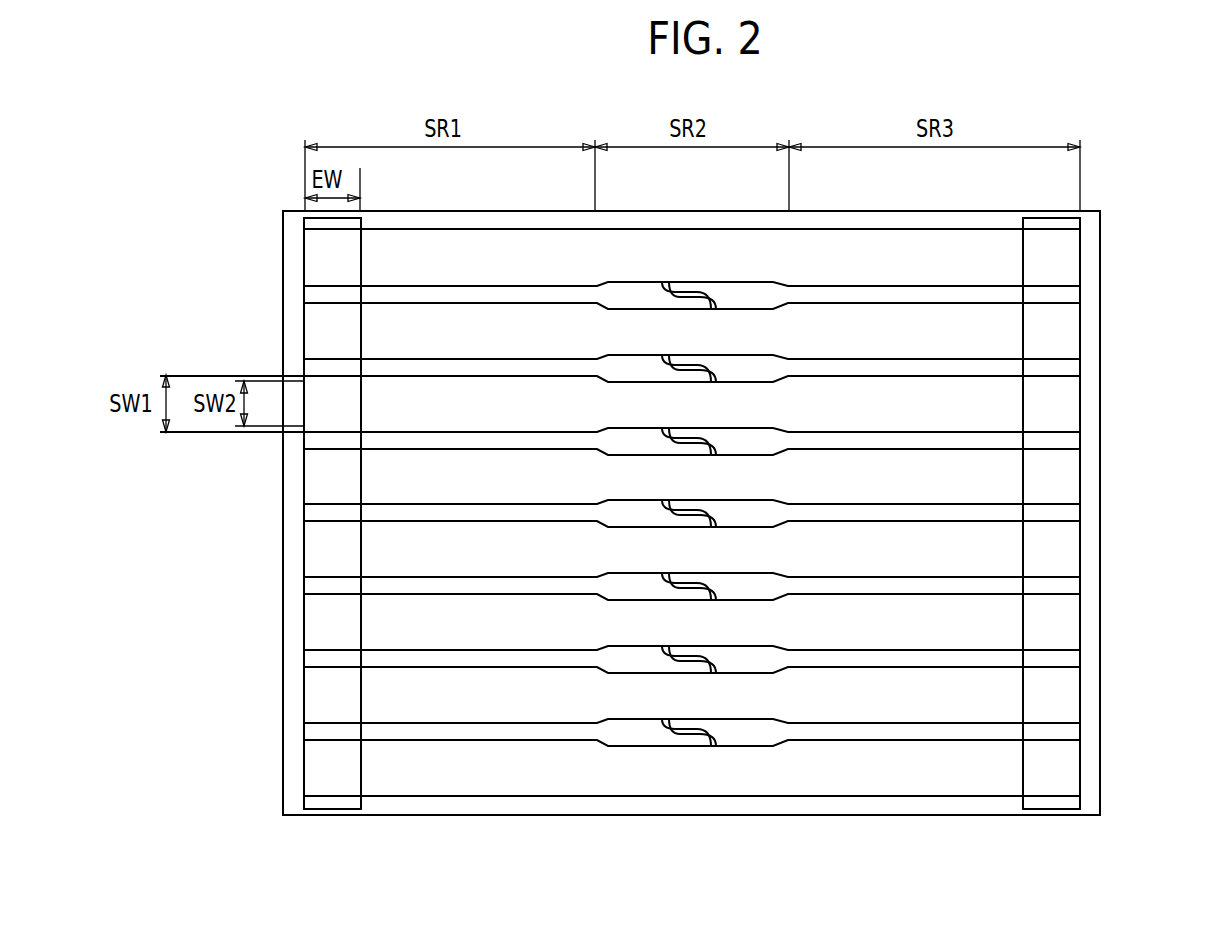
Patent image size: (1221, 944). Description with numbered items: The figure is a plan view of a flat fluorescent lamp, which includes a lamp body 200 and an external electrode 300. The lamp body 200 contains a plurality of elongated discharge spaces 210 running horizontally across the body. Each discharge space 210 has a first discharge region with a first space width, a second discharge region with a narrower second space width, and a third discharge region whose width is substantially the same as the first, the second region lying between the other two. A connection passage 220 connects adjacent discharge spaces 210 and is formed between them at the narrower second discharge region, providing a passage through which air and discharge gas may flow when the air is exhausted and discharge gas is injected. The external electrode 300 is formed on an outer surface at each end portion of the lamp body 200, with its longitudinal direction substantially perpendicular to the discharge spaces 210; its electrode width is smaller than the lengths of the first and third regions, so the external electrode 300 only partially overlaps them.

The lamp body 200 is at (803, 816).
The discharge space 210 is at (973, 552).
The connection passage 220 is at (694, 736).
The external electrode 300 is at (308, 802).